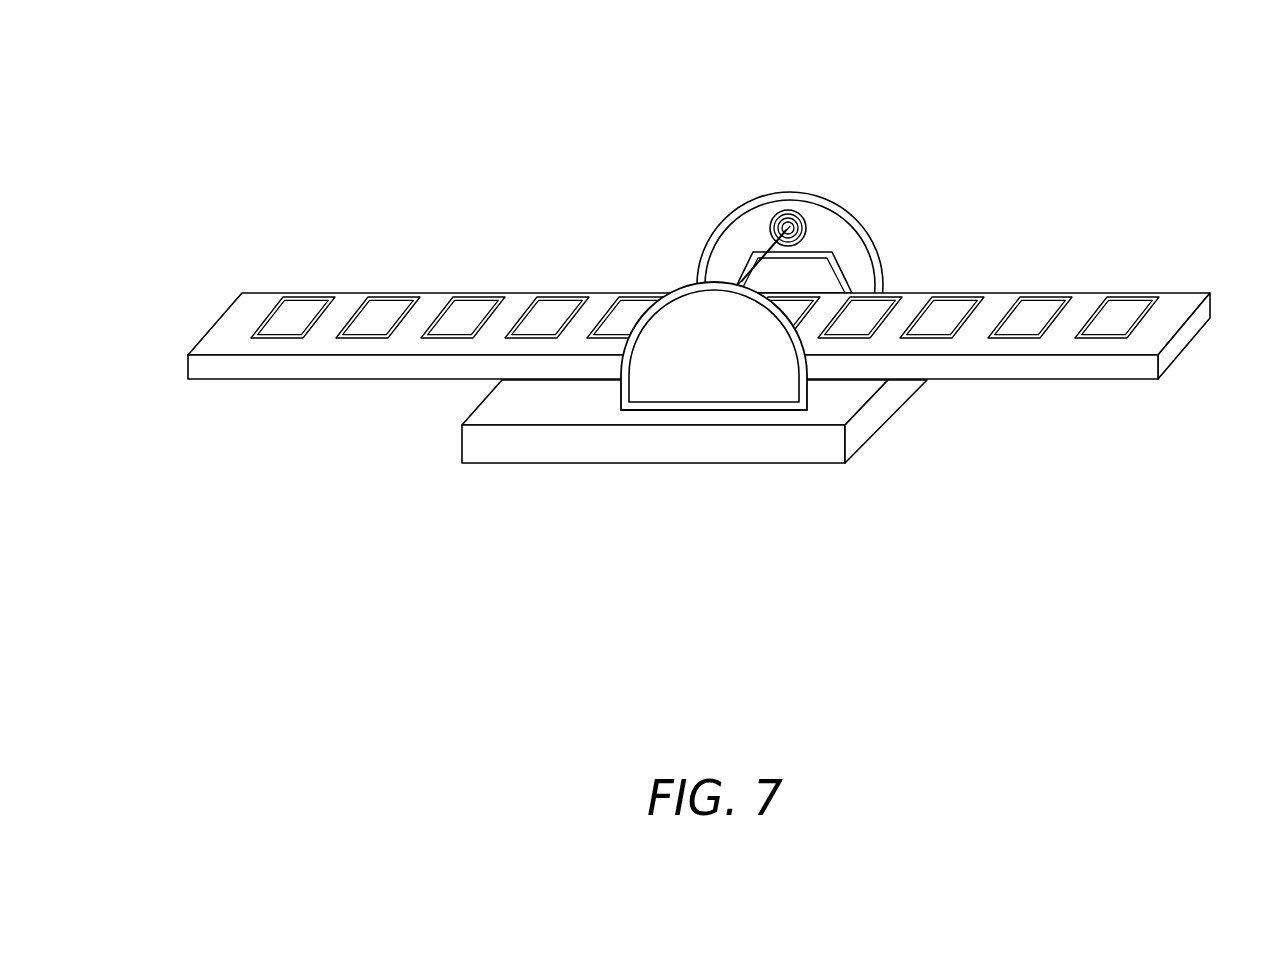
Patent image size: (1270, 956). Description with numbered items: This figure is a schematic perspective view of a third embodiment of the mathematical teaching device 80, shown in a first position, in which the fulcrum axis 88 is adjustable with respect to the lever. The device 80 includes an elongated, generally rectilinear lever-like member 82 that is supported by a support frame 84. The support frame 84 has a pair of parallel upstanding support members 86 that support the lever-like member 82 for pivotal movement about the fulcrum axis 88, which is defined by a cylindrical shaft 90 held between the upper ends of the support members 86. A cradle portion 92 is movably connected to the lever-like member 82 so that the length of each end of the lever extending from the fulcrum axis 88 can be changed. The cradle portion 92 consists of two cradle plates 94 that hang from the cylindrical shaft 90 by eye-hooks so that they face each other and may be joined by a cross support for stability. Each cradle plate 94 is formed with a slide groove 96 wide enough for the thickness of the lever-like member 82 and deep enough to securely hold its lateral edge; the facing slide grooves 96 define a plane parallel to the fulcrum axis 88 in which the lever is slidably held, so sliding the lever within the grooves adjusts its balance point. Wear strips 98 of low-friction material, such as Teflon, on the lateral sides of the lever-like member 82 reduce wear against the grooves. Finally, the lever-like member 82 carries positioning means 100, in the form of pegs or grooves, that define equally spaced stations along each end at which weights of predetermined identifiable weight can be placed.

The device 80 is at (340, 146).
The lever-like member 82 is at (1177, 305).
The support frame 84 is at (860, 427).
The upstanding support members 86 is at (840, 267).
The fulcrum axis 88 is at (823, 185).
The cylindrical shaft 90 is at (808, 203).
The cradle portion 92 is at (783, 217).
The cradle plates 94 is at (768, 273).
The slide groove 96 is at (618, 318).
The wear strips 98 is at (1073, 370).
The positioning means 100 is at (948, 317).